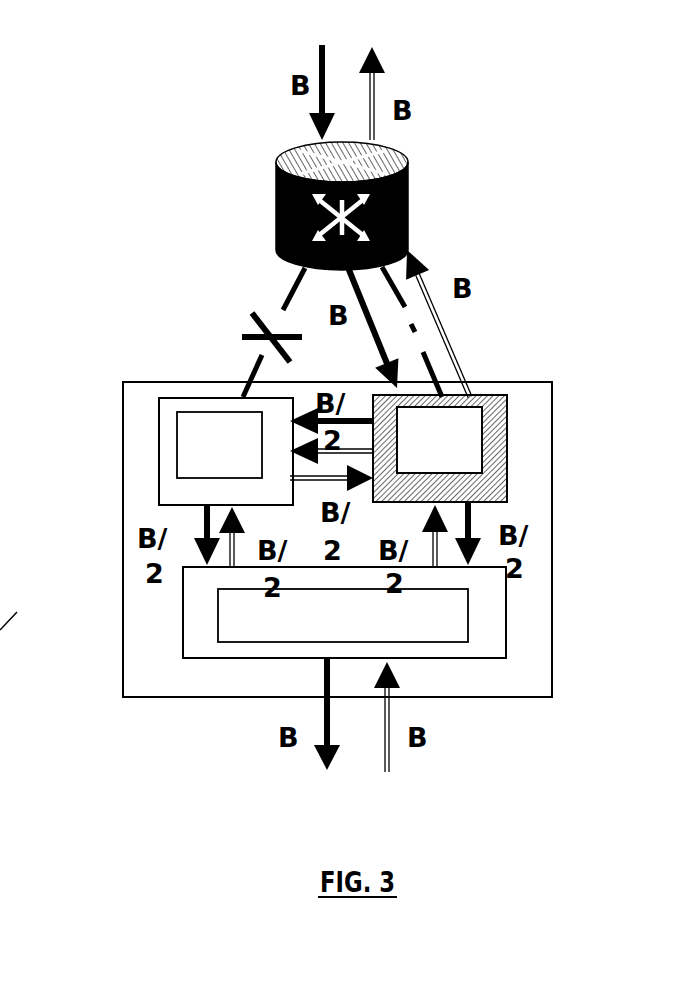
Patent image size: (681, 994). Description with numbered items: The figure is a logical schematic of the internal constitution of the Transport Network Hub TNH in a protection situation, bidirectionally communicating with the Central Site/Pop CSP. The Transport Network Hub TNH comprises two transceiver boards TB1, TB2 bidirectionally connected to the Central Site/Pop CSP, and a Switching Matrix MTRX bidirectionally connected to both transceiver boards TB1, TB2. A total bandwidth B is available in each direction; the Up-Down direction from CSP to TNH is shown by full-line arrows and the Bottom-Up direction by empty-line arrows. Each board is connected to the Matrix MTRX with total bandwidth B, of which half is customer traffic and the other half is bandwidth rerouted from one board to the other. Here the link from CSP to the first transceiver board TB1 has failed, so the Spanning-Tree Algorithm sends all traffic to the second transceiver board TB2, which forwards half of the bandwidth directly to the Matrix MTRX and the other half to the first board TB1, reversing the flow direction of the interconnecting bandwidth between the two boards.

The Central Site/Pop CSP is at (277, 223).
The first transceiver board TB1 is at (165, 417).
The second transceiver board TB2 is at (497, 410).
The Transport Network Hub TNH is at (140, 632).
The Switching Matrix MTRX is at (490, 616).